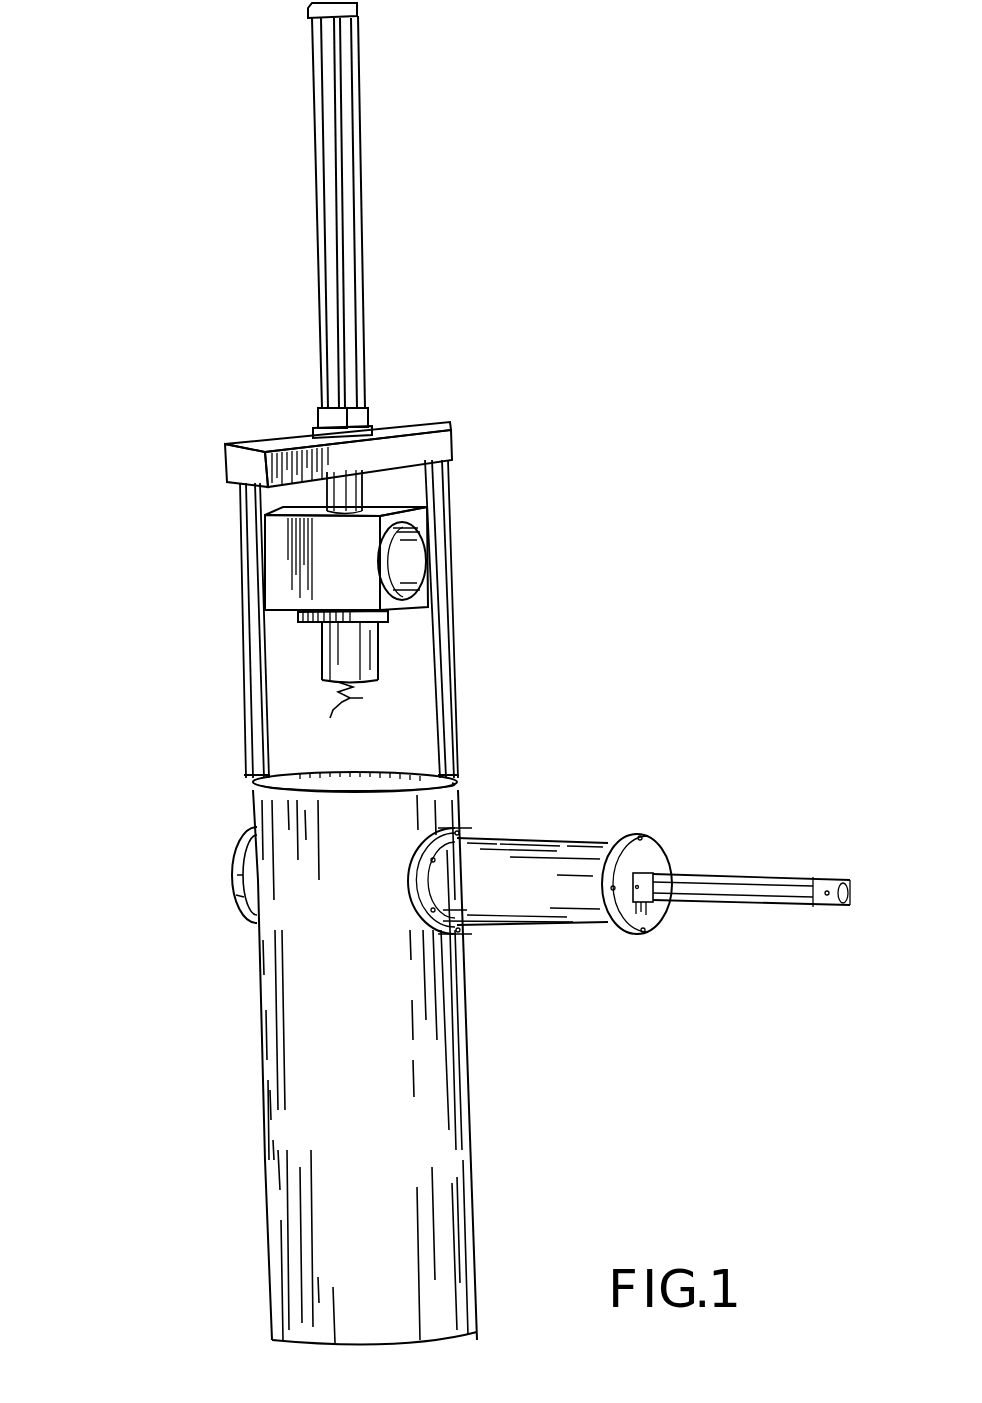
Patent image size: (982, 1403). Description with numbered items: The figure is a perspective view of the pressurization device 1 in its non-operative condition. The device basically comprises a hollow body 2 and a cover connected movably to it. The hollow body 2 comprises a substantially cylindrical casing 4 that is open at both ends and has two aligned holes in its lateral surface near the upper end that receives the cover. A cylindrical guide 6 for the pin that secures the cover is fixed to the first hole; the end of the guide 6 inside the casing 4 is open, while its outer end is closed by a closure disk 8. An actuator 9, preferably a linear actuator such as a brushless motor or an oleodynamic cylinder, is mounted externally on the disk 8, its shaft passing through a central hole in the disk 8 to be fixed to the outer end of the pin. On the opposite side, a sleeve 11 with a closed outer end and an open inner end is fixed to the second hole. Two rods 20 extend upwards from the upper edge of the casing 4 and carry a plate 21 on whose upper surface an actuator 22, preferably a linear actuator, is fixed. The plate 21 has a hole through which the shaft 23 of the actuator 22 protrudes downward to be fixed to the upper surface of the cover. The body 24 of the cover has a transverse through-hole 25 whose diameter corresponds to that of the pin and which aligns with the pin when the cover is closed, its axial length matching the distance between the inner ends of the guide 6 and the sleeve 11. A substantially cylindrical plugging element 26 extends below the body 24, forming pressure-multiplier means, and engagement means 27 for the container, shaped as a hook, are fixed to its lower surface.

The pressurization device 1 is at (664, 158).
The hollow body 2 is at (172, 1168).
The cylindrical casing 4 is at (450, 1145).
The cylindrical guide 6 is at (552, 872).
The closure disk 8 is at (650, 857).
The actuator 9 is at (738, 882).
The sleeve 11 is at (252, 898).
The rods 20 is at (257, 752).
The plate 21 is at (451, 432).
The actuator 22 is at (360, 192).
The shaft 23 is at (348, 488).
The body of the cover 24 is at (282, 590).
The transverse through-hole 25 is at (405, 562).
The plugging element 26 is at (365, 647).
The engagement means 27 is at (342, 719).